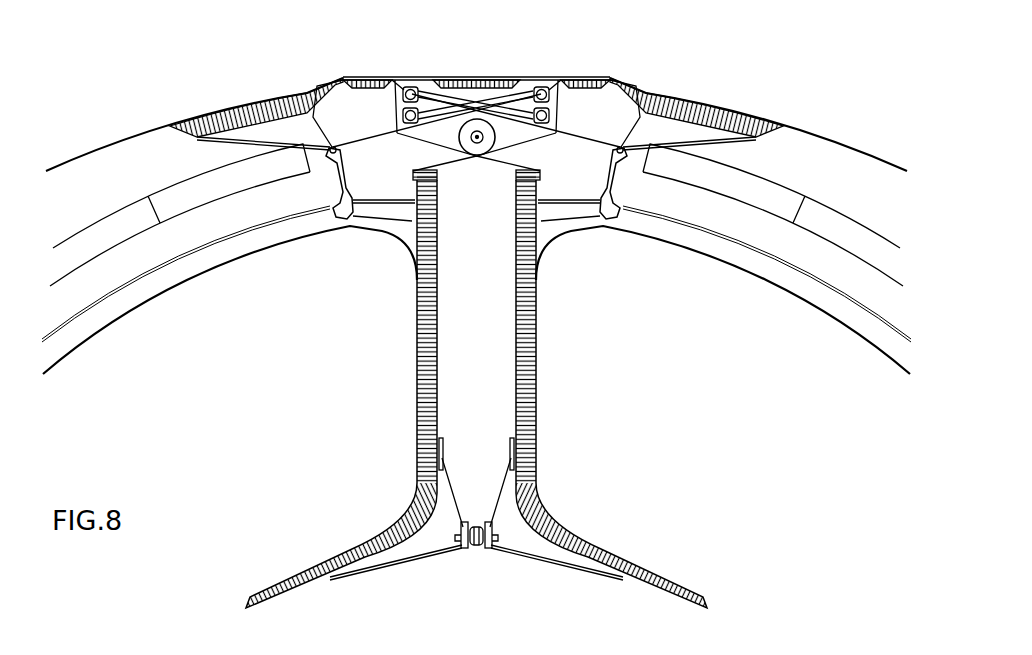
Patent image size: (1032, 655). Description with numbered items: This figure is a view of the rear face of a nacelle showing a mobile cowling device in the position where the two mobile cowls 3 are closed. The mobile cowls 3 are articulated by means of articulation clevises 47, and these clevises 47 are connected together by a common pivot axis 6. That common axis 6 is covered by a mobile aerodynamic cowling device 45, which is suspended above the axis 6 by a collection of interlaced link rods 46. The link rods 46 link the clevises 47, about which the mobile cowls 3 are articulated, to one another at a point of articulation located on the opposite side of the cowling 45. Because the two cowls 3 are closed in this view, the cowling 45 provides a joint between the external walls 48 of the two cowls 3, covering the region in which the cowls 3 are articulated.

The mobile cowl 3 is at (143, 315).
The common pivot axis 6 is at (477, 160).
The mobile aerodynamic cowling device 45 is at (480, 72).
The interlaced link rods 46 is at (432, 122).
The articulation clevis 47 is at (330, 80).
The external wall 48 is at (197, 115).